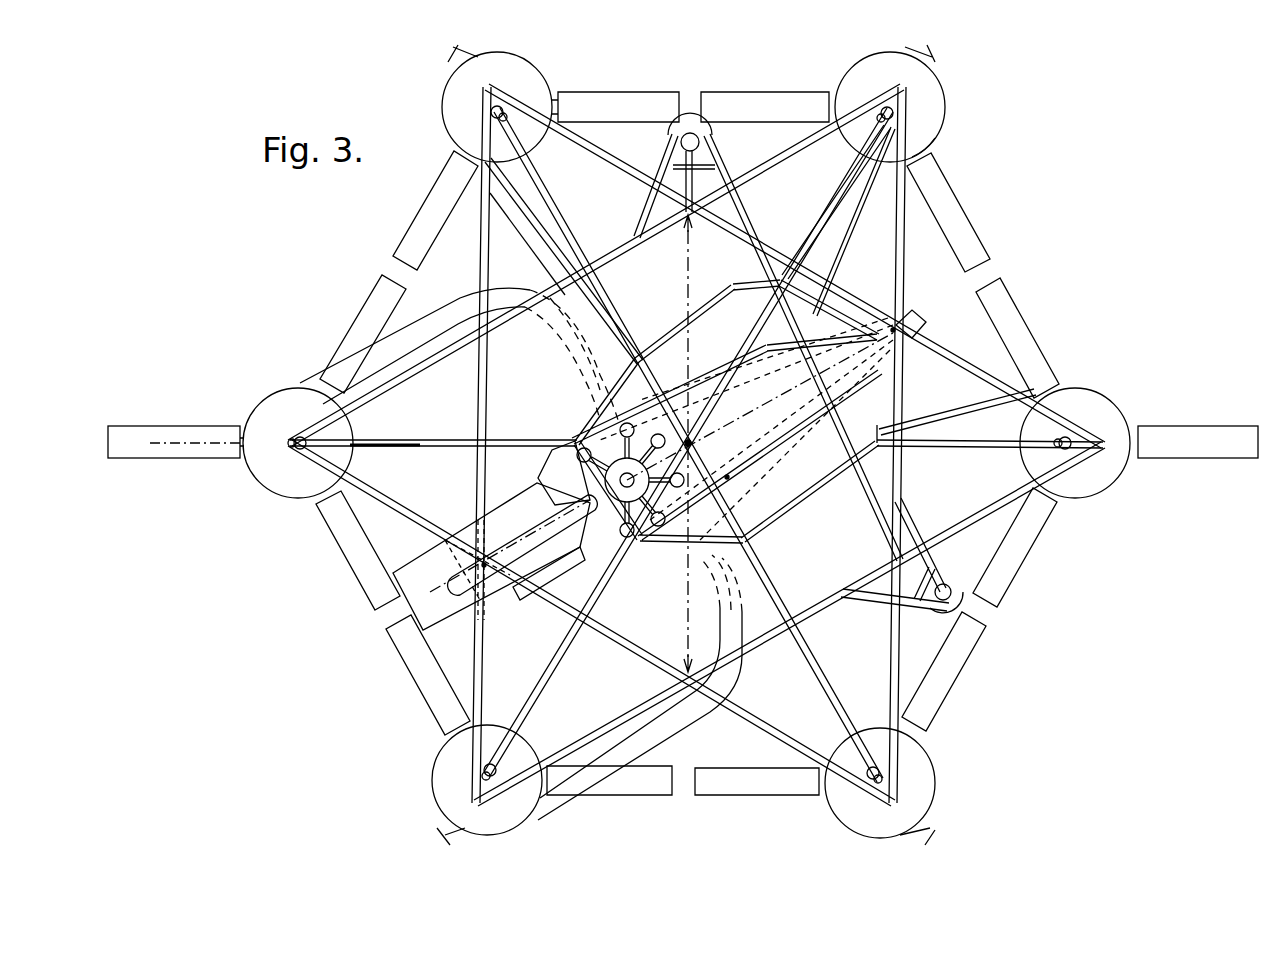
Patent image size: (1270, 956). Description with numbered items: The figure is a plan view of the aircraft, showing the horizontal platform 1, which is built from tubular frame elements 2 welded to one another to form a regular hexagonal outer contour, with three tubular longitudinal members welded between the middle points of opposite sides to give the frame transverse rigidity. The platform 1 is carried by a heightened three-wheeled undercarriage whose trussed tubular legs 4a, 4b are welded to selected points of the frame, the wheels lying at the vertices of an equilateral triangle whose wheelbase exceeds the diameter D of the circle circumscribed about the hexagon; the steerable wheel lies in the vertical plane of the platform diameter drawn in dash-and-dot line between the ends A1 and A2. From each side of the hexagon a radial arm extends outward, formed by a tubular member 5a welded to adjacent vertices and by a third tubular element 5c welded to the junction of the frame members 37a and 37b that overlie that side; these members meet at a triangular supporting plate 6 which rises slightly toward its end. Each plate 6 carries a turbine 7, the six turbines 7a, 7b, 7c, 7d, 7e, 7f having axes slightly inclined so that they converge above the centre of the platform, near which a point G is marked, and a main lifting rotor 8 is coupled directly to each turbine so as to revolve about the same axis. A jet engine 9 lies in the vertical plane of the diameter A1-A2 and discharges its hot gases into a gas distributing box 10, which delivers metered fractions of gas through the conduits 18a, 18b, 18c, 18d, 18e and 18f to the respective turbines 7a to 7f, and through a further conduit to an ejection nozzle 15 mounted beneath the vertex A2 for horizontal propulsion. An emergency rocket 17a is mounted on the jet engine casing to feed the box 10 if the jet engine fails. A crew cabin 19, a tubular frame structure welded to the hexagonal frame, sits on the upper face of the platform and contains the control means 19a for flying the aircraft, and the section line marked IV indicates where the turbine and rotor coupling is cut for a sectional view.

The platform 1 is at (503, 445).
The tubular frame elements 2 is at (500, 322).
The leg 4a is at (925, 560).
The leg 4b is at (675, 178).
The tubular member 5a is at (760, 170).
The third tubular element 5c is at (818, 222).
The supporting plate 6 is at (897, 118).
The turbine 7 is at (943, 97).
The gas turbine 7a is at (440, 760).
The gas turbine 7b is at (935, 768).
The gas turbine 7c is at (1108, 405).
The gas turbine 7d is at (935, 138).
The gas turbine 7e is at (542, 84).
The gas turbine 7f is at (272, 400).
The main lifting rotor 8 is at (985, 262).
The jet engine 9 is at (510, 502).
The gas distributing box 10 is at (598, 548).
The ejection nozzle 15 is at (917, 320).
The rocket 17a is at (450, 575).
The conduit 18a is at (678, 733).
The conduit 18b is at (780, 682).
The conduit 18c is at (945, 415).
The conduit 18d is at (843, 246).
The conduit 18e is at (523, 220).
The conduit 18f is at (408, 312).
The crew cabin 19 is at (727, 411).
The control means 19a is at (578, 440).
The tubular frame member 37a is at (750, 245).
The tubular frame member 37b is at (812, 300).
The end of platform diameter A1 is at (484, 570).
The vertex of platform A2 is at (900, 325).
The diameter of circumscribed circle D is at (696, 443).
The point G is at (727, 477).
The section line IV is at (194, 454).